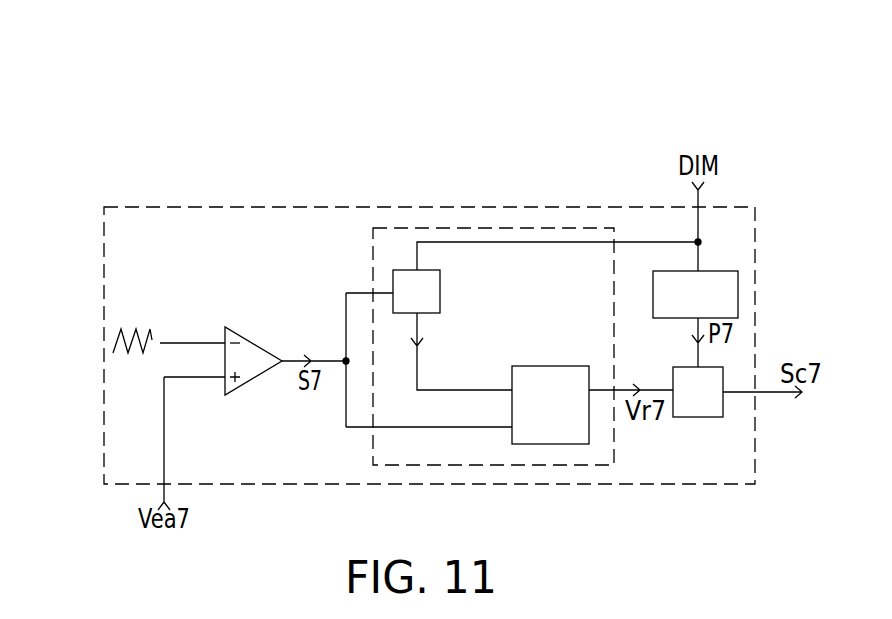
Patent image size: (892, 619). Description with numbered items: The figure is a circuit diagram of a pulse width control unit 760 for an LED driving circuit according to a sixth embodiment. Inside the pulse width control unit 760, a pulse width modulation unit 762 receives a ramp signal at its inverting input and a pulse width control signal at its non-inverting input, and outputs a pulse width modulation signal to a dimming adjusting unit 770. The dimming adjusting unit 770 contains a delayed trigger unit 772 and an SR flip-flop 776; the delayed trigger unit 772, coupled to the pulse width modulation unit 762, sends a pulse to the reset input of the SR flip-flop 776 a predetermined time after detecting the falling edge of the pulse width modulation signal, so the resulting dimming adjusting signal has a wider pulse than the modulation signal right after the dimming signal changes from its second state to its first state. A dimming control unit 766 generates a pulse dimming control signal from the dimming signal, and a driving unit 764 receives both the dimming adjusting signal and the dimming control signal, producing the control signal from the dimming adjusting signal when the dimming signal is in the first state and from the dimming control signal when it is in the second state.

The pulse width control unit 760 is at (104, 208).
The dimming adjusting unit 770 is at (373, 228).
The delayed trigger unit 772 is at (436, 306).
The SR flip-flop 776 is at (557, 372).
The pulse width modulation unit 762 is at (256, 352).
The dimming control unit 766 is at (715, 307).
The driving unit 764 is at (718, 407).